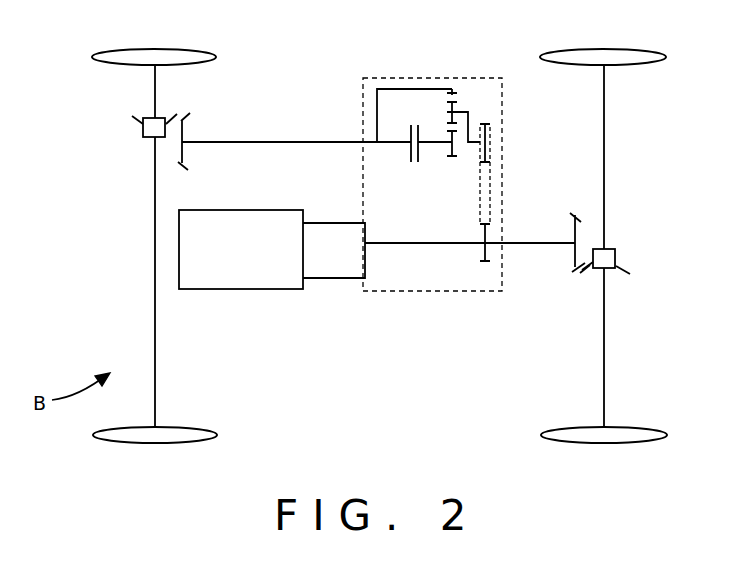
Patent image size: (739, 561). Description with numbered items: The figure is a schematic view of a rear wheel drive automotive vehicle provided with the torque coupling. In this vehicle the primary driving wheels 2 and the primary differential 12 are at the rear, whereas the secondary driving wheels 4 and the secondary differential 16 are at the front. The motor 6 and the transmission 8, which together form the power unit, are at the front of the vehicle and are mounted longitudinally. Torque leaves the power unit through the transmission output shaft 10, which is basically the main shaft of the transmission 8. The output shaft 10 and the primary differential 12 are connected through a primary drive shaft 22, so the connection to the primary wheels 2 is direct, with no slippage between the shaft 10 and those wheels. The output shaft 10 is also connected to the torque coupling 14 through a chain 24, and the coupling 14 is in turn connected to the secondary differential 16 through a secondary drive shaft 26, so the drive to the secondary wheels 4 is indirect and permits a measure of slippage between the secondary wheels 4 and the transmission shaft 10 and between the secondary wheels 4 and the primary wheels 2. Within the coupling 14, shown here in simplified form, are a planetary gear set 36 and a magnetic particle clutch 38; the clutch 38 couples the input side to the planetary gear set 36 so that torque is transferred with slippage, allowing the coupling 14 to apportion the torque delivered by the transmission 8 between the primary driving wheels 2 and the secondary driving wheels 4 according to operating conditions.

The primary driving wheels 2 is at (597, 58).
The secondary driving wheels 4 is at (157, 58).
The motor 6 is at (250, 278).
The transmission 8 is at (348, 270).
The transmission output shaft 10 is at (405, 245).
The primary differential 12 is at (609, 258).
The torque coupling 14 is at (369, 88).
The secondary differential 16 is at (148, 130).
The primary drive shaft 22 is at (507, 240).
The chain 24 is at (478, 189).
The secondary drive shaft 26 is at (273, 142).
The planetary gear set 36 is at (460, 111).
The magnetic particle clutch 38 is at (412, 155).